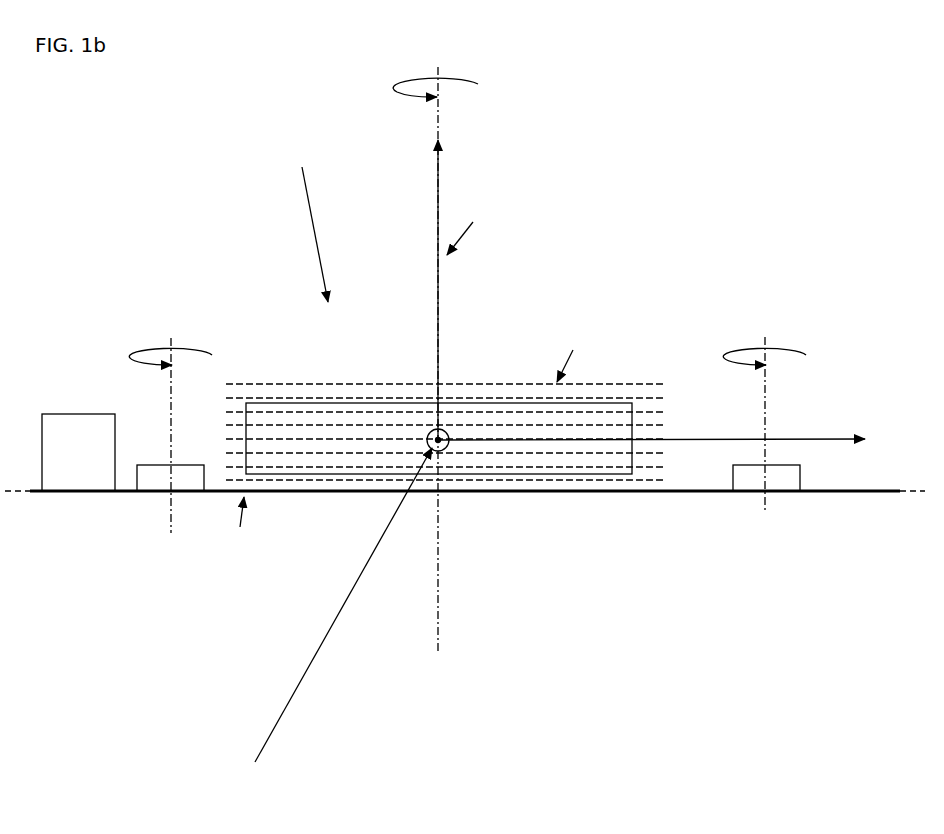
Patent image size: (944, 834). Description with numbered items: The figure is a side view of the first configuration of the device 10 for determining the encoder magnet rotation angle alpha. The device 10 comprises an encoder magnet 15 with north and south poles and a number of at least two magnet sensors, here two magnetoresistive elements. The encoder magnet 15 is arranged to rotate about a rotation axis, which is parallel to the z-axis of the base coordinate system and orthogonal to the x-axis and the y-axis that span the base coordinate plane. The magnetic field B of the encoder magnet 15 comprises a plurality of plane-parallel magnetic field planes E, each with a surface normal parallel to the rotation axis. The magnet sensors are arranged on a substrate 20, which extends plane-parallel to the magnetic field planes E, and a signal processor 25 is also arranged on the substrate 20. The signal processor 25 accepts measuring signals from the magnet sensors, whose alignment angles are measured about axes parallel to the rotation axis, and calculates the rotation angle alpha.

The device 10 is at (740, 137).
The encoder magnet 15 is at (439, 438).
The substrate 20 is at (610, 493).
The signal processor 25 is at (78, 452).